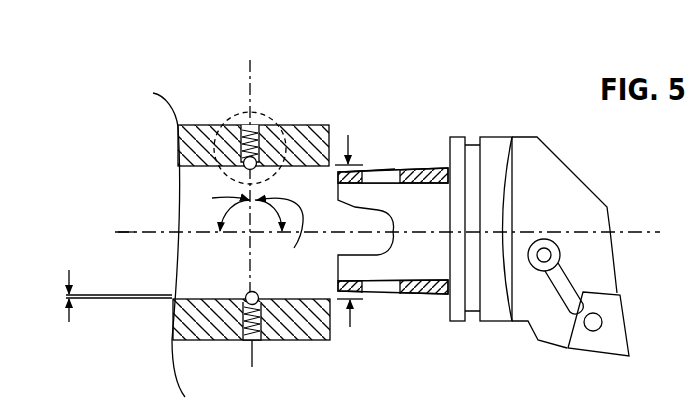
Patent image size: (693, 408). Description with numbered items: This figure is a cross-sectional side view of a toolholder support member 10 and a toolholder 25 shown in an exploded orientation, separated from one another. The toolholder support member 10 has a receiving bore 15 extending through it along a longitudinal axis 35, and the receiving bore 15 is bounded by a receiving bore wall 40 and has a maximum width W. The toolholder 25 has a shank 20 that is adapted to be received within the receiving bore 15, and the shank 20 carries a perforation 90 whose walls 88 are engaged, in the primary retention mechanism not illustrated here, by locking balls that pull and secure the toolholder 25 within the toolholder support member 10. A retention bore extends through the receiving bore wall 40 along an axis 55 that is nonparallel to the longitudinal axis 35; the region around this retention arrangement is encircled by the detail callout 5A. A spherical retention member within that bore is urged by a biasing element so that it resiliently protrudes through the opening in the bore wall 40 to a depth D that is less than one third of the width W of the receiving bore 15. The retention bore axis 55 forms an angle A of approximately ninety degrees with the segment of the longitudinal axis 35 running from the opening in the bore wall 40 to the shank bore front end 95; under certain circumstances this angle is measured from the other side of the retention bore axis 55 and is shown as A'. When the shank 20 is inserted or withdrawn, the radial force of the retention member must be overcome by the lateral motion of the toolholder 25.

The toolholder support member 10 is at (324, 125).
The receiving bore 15 is at (202, 273).
The shank 20 is at (423, 296).
The toolholder 25 is at (553, 165).
The longitudinal axis 35 is at (130, 231).
The receiving bore wall 40 is at (200, 168).
The retention bore axis 55 is at (245, 96).
The detail view callout 5A is at (263, 110).
The walls of the perforation 88 is at (368, 170).
The perforation 90 is at (393, 168).
The shank bore front end 95 is at (336, 130).
The depth D is at (109, 296).
The width W is at (351, 317).
The angle A is at (279, 230).
The angle A' is at (219, 209).